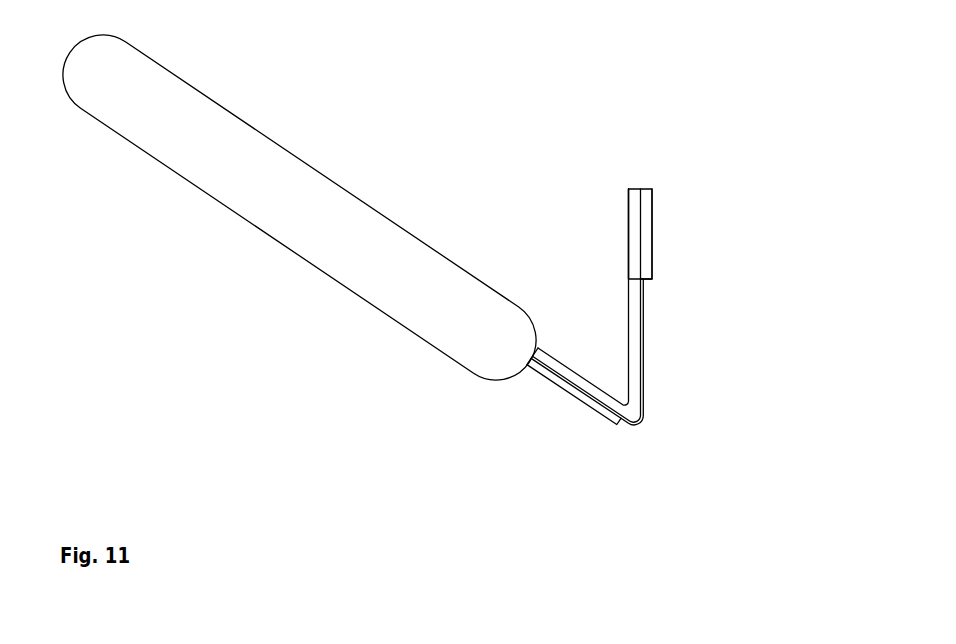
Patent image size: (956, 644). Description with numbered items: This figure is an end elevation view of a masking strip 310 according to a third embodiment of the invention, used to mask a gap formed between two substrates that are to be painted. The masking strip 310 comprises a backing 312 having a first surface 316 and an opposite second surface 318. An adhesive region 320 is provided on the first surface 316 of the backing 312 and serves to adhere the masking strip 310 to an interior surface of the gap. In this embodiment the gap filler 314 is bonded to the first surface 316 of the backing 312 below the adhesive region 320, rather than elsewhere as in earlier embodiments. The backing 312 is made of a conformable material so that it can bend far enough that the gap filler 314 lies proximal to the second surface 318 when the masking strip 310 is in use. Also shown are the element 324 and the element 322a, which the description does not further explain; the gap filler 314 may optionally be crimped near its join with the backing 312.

The masking strip 310 is at (175, 348).
The gap filler 314 is at (235, 180).
The backing 312 is at (634, 203).
The first surface 316 is at (643, 267).
The second surface 318 is at (628, 240).
The inner plate 324 is at (642, 233).
The adhesive region 320 is at (643, 423).
The strip 322a is at (558, 385).